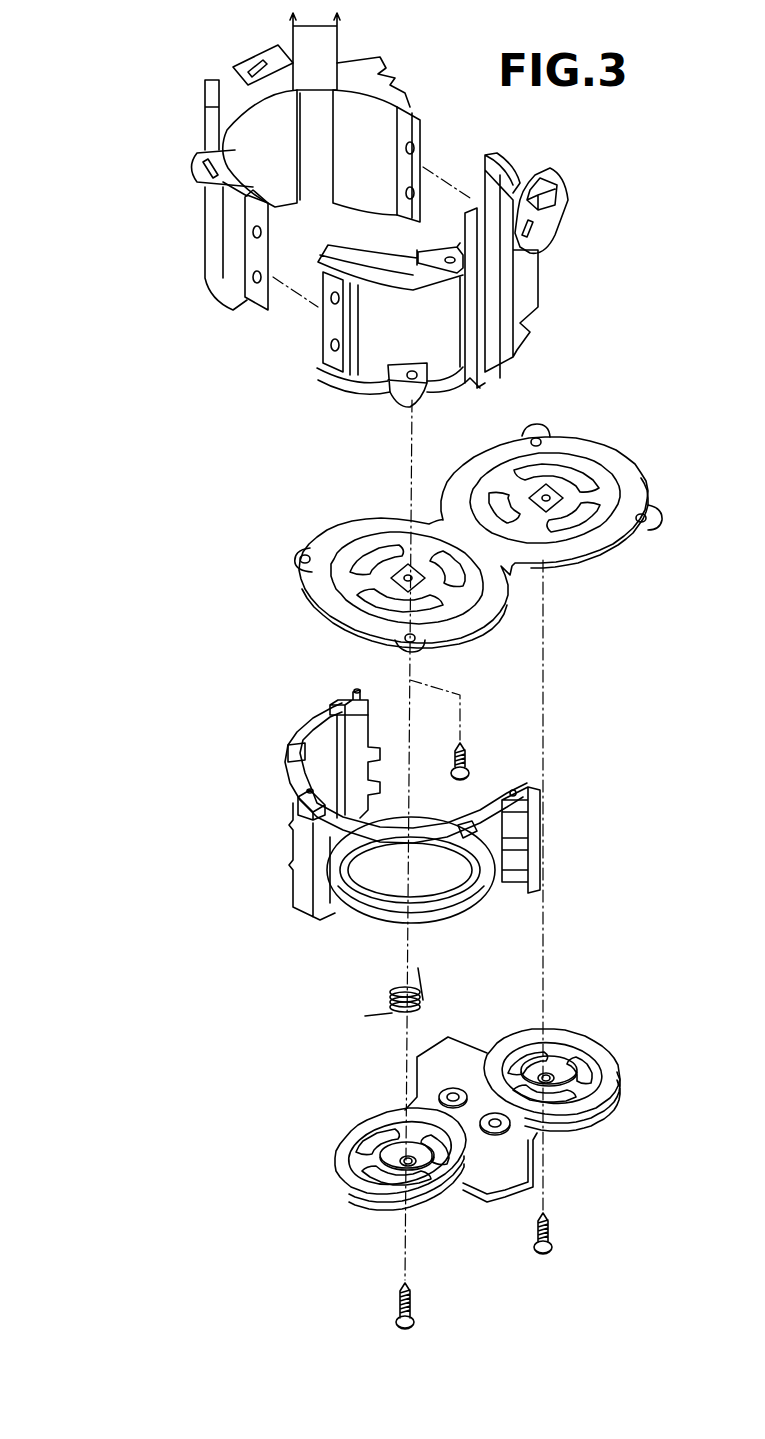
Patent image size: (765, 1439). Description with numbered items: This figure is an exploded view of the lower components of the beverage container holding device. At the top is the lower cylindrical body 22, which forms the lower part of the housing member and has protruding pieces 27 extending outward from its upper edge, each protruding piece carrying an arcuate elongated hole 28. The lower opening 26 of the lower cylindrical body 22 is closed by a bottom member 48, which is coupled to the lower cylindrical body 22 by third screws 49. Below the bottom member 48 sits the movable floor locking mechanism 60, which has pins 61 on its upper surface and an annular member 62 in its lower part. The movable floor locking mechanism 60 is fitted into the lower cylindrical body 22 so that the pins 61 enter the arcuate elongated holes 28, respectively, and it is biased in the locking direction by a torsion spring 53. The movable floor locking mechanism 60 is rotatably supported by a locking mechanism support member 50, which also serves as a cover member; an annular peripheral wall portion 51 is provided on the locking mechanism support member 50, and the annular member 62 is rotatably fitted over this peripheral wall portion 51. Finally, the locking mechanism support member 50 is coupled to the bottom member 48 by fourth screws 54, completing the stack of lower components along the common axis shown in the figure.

The lower cylindrical body 22 is at (353, 210).
The lower opening 26 is at (300, 253).
The protruding pieces 27 is at (276, 50).
The arcuate elongated holes 28 is at (262, 74).
The bottom member 48 is at (612, 462).
The third screws 49 is at (472, 770).
The locking mechanism support member 50 is at (428, 1141).
The annular peripheral wall portion 51 is at (372, 1118).
The torsion spring 53 is at (395, 990).
The fourth screws 54 is at (396, 1322).
The movable floor locking mechanism 60 is at (386, 812).
The pins 61 is at (355, 690).
The annular member 62 is at (443, 905).